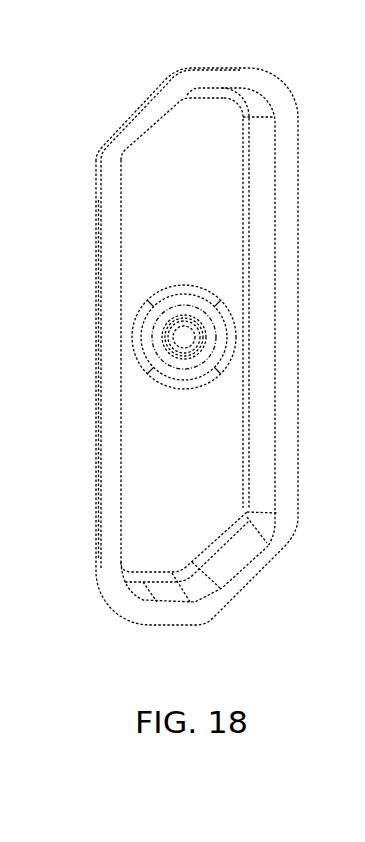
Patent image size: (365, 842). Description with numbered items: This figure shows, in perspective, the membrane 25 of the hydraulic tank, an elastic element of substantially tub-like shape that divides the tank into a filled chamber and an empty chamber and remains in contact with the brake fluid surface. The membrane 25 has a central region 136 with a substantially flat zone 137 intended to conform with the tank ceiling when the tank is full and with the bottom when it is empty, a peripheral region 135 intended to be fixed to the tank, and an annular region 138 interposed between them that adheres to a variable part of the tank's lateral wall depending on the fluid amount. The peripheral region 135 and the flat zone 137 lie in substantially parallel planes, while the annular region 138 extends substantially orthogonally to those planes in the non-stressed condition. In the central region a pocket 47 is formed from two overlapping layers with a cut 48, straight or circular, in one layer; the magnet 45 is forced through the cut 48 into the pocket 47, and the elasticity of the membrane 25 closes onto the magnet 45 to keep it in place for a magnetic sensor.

The membrane 25 is at (124, 90).
The peripheral region 135 is at (110, 165).
The central region 136 is at (158, 433).
The substantially flat zone 137 is at (173, 210).
The annular region 138 is at (255, 168).
The magnet 45 is at (183, 340).
The pocket 47 is at (163, 324).
The cut 48 is at (198, 333).